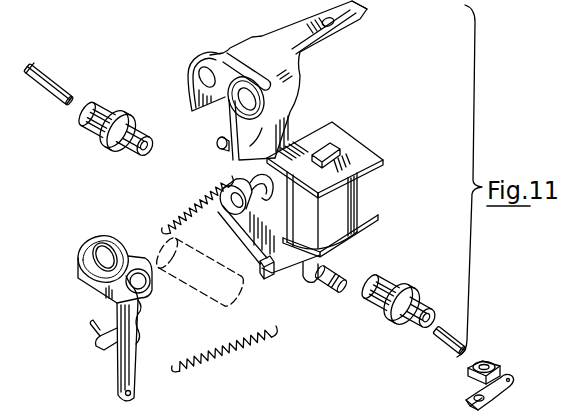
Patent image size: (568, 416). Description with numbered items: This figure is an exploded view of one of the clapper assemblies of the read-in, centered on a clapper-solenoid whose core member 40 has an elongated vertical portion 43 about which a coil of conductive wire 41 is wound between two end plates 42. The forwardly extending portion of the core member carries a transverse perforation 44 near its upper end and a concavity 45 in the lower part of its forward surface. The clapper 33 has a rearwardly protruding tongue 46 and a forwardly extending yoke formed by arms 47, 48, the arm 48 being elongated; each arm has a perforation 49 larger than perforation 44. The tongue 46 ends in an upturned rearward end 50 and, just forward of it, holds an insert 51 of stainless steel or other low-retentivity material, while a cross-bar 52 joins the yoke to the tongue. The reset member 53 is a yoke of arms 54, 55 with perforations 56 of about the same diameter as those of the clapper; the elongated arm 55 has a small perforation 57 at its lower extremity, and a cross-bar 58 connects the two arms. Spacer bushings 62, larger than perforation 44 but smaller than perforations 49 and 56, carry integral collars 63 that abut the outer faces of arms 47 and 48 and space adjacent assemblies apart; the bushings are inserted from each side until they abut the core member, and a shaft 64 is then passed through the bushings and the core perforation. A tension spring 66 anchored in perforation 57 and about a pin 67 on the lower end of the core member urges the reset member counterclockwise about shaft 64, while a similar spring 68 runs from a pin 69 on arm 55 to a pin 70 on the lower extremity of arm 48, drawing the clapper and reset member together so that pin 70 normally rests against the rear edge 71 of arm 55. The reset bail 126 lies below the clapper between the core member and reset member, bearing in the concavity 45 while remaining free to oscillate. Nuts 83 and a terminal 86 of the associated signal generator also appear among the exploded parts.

The clapper 33 is at (268, 80).
The core member 40 is at (257, 229).
The coil of conductive wire 41 is at (336, 187).
The end plates 42 is at (383, 157).
The elongated vertical portion 43 is at (340, 150).
The transverse perforation 44 is at (250, 183).
The concavity 45 is at (270, 276).
The tongue 46 is at (304, 50).
The arm of yoke 47 is at (188, 95).
The arm of yoke 48 is at (262, 128).
The perforation 49 is at (216, 60).
The upturned rearward end 50 is at (360, 14).
The insert 51 is at (335, 28).
The cross-bar 52 is at (273, 68).
The reset member 53 is at (122, 345).
The arm of yoke 54 is at (106, 264).
The arm of yoke 55 is at (140, 315).
The perforations 56 is at (116, 262).
The perforation 57 is at (133, 399).
The cross-bar 58 is at (92, 288).
The spacer bushings 62 is at (112, 112).
The collars 63 is at (98, 146).
The shaft 64 is at (70, 97).
The tension spring 66 is at (234, 350).
The pin 67 is at (342, 278).
The spring 68 is at (190, 186).
The pin 69 is at (104, 334).
The pin 70 is at (216, 144).
The rear edge 71 is at (140, 336).
The nuts 83 is at (494, 364).
The terminal 86 is at (496, 402).
The reset bail 126 is at (208, 310).